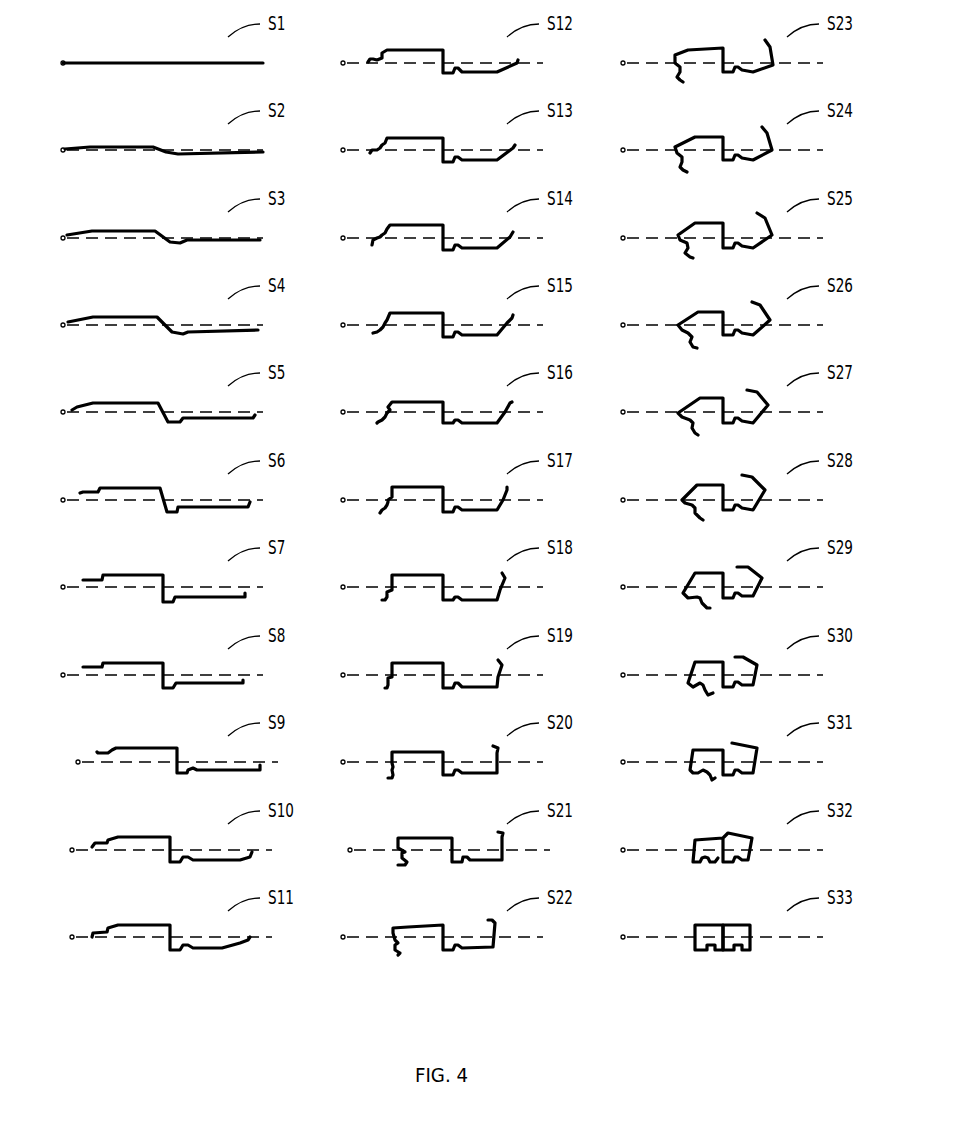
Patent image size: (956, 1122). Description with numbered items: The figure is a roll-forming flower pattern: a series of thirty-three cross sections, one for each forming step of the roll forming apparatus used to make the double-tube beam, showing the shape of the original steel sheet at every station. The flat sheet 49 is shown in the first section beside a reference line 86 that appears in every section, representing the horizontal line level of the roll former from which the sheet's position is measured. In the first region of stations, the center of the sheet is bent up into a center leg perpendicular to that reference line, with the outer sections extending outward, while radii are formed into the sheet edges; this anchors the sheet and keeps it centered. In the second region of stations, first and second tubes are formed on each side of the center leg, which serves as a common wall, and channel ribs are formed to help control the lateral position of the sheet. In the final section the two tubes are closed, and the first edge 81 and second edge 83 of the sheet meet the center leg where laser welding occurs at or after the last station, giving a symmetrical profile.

The sheet metal blank 49 is at (118, 62).
The reference line 86 is at (87, 62).
The first edge of closed profile 81 is at (700, 883).
The second edge of closed profile 83 is at (731, 958).